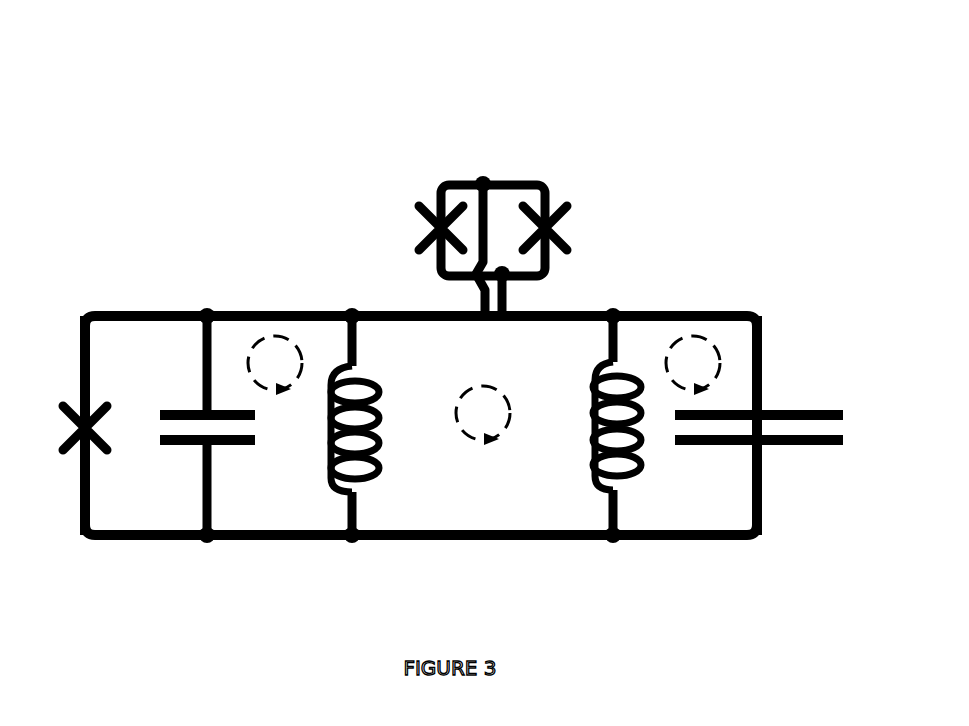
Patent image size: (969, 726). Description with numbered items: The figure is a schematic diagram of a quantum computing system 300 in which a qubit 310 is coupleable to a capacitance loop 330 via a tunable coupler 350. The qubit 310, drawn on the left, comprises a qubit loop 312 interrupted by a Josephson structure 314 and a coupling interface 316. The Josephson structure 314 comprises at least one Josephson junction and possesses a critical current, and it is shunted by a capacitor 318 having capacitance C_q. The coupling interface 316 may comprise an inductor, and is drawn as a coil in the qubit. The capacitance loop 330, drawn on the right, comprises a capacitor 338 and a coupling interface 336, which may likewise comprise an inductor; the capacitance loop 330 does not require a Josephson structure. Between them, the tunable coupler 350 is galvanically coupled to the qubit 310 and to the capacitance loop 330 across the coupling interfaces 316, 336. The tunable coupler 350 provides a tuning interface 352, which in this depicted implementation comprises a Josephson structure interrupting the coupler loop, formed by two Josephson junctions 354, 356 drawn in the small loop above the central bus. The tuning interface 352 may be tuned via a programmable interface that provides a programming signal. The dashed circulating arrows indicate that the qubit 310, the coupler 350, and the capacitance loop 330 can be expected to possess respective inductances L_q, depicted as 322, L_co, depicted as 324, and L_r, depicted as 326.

The quantum computing system 300 is at (162, 56).
The qubit 310 is at (80, 155).
The qubit loop 312 is at (170, 312).
The Josephson structure 314 is at (70, 447).
The coupling interface 316 is at (372, 478).
The capacitor 318 is at (237, 445).
The inductance L_q 322 is at (270, 334).
The inductance L_co 324 is at (501, 440).
The inductance L_r 326 is at (688, 334).
The capacitance loop 330 is at (618, 155).
The coupling interface 336 is at (600, 493).
The capacitor 338 is at (805, 445).
The tunable coupler 350 is at (355, 155).
The tuning interface 352 is at (469, 163).
The Josephson junction 354 is at (436, 225).
The Josephson junction 356 is at (548, 225).